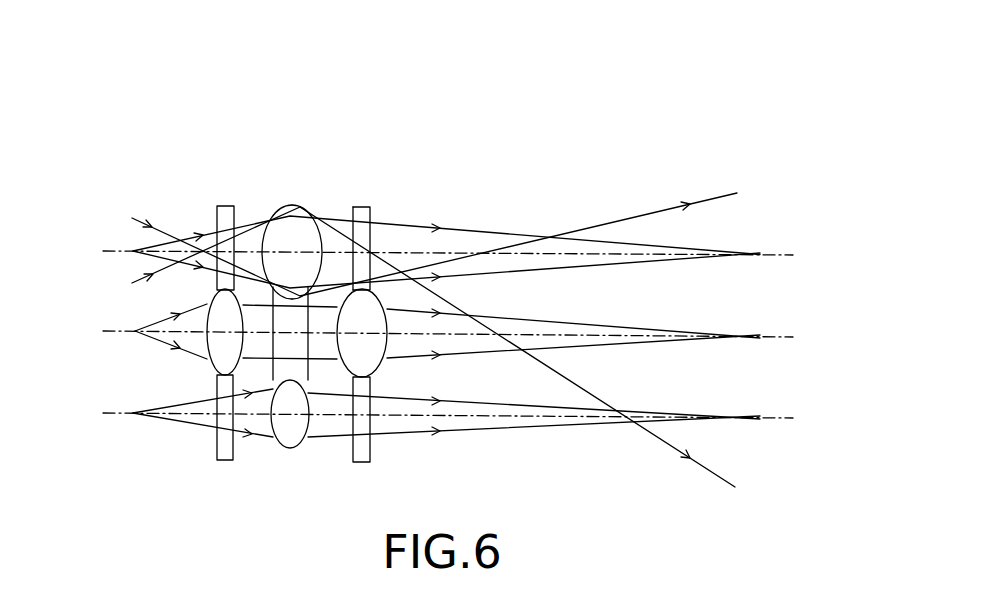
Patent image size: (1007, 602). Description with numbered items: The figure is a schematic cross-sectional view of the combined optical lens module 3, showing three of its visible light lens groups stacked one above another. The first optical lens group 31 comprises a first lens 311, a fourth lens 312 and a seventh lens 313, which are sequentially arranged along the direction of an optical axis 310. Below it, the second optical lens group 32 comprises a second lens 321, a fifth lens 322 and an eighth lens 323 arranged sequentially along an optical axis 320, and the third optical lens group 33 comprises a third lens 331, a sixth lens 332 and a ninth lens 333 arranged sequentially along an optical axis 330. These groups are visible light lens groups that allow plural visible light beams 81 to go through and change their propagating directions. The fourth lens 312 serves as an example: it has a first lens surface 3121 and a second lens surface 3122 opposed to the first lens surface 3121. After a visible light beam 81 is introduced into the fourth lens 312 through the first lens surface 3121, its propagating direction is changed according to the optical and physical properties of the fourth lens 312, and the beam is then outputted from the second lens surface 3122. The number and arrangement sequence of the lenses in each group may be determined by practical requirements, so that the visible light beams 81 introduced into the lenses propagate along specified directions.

The combined optical lens module 3 is at (168, 131).
The first optical lens group 31 is at (397, 42).
The second optical lens group 32 is at (518, 42).
The third optical lens group 33 is at (640, 42).
The first lens 311 is at (226, 207).
The fourth lens 312 is at (312, 184).
The first lens surface 3121 is at (262, 243).
The second lens surface 3122 is at (361, 238).
The seventh lens 313 is at (386, 196).
The second lens 321 is at (218, 298).
The fifth lens 322 is at (282, 358).
The eighth lens 323 is at (383, 366).
The third lens 331 is at (215, 447).
The sixth lens 332 is at (278, 441).
The ninth lens 333 is at (350, 452).
The visible light beam 81 is at (471, 232).
The optical axis 310 is at (763, 255).
The optical axis 320 is at (763, 337).
The optical axis 330 is at (763, 418).